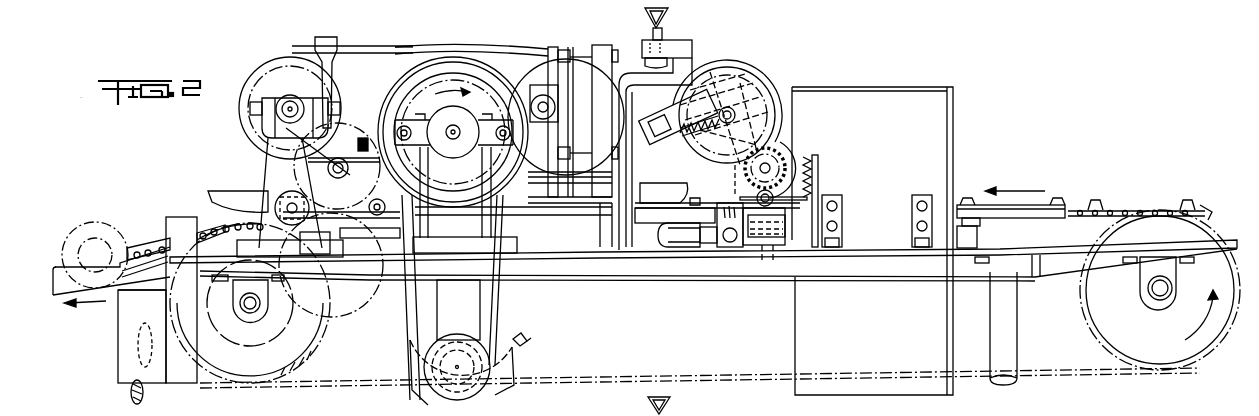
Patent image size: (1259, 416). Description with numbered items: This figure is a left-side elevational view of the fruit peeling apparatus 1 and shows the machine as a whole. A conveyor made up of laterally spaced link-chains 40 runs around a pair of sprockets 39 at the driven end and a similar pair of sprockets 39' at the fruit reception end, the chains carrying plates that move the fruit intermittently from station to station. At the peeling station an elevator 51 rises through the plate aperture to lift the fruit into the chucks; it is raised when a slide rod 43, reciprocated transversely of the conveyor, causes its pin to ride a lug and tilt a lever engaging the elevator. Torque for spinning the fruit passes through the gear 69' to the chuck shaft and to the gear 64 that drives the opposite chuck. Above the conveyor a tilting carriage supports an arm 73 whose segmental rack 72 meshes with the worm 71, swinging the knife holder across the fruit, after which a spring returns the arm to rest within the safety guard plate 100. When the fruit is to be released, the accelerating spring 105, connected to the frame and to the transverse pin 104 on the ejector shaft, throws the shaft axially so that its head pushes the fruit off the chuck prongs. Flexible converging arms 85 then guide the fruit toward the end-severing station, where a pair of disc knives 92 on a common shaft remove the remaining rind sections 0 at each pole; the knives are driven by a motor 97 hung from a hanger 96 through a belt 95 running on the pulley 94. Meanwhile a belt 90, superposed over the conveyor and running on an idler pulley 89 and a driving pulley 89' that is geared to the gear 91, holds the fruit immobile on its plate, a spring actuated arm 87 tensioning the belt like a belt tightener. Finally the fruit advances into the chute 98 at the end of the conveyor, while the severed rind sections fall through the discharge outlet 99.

The machine frame 1 is at (556, 258).
The rind end section 0 is at (115, 224).
The sprockets 39 is at (261, 303).
The sprockets 39' is at (1107, 290).
The link-chains 40 is at (1076, 206).
The rod 43 is at (729, 243).
The elevator 51 is at (743, 230).
The gear 64 is at (778, 150).
The gear 69' is at (727, 98).
The worm 71 is at (724, 180).
The segmental gear or rack 72 is at (708, 140).
The arm 73 is at (673, 130).
The converging arms 85 is at (542, 172).
The spring actuated arm 87 is at (372, 168).
The idler pulley 89 is at (571, 409).
The driving pulley 89' is at (430, 130).
The belt 90 is at (414, 47).
The gear 91 is at (350, 135).
The disc or circular knives 92 is at (497, 66).
The pulley 94 is at (470, 62).
The belt 95 is at (500, 300).
The hanger 96 is at (462, 342).
The motor 97 is at (510, 330).
The chute 98 is at (63, 305).
The discharge outlet 99 is at (143, 273).
The safety guard plate 100 is at (872, 241).
The transverse pin 104 is at (800, 200).
The spring 105 is at (816, 178).